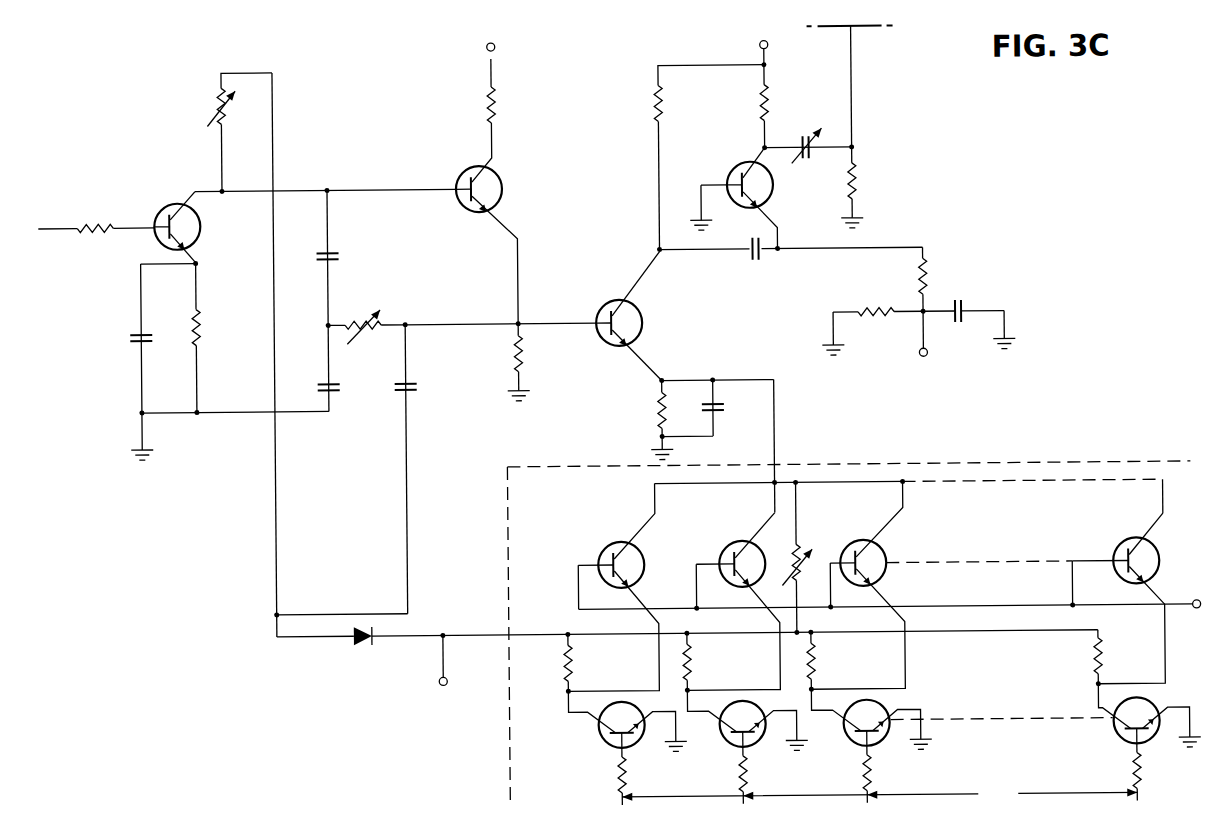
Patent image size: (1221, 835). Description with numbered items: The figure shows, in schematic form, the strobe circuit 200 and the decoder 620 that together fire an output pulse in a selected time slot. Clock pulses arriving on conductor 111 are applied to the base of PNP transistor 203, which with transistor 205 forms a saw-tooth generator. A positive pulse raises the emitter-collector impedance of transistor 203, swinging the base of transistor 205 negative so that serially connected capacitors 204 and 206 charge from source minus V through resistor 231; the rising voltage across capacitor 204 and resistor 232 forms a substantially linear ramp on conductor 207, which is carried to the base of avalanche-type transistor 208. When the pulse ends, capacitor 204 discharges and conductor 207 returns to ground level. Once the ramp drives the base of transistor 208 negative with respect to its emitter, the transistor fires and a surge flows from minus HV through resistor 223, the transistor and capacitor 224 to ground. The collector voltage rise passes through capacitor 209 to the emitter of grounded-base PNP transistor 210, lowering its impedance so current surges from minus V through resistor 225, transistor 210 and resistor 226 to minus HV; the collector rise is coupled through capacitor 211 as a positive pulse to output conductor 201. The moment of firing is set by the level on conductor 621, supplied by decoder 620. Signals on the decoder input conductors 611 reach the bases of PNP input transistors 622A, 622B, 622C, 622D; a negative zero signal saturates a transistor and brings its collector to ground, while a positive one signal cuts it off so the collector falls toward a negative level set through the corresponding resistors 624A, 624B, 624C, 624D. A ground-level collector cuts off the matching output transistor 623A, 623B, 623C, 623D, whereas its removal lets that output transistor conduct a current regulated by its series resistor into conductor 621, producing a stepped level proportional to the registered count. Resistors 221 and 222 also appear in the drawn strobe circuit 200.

The conductor 111 is at (58, 225).
The strobe circuit 200 is at (454, 41).
The output conductor 201 is at (857, 110).
The transistor 203 is at (162, 204).
The capacitor 204 is at (325, 374).
The transistor 205 is at (461, 187).
The capacitor 206 is at (337, 250).
The conductor 207 is at (539, 325).
The avalanche-type transistor 208 is at (603, 300).
The capacitor 209 is at (746, 259).
The transistor 210 is at (735, 169).
The capacitor 211 is at (810, 168).
The resistor 221 is at (500, 97).
The variable resistor 222 is at (349, 320).
The resistor 223 is at (657, 98).
The capacitor 224 is at (721, 420).
The resistor 225 is at (931, 285).
The resistor 226 is at (771, 103).
The resistor 231 is at (214, 99).
The resistor 232 is at (513, 341).
The input conductors 611 is at (879, 795).
The decoder 620 is at (858, 620).
The conductor 621 is at (780, 395).
The decoder input transistor 622A is at (603, 740).
The decoder input transistor 622B is at (725, 740).
The decoder input transistor 622C is at (850, 740).
The decoder input transistor 622D is at (1118, 740).
The output transistor 623A is at (606, 548).
The output transistor 623B is at (729, 545).
The output transistor 623C is at (855, 542).
The output transistor 623D is at (1120, 546).
The resistor 624A is at (573, 664).
The resistor 624B is at (692, 664).
The resistor 624C is at (816, 664).
The resistor 624D is at (1089, 665).